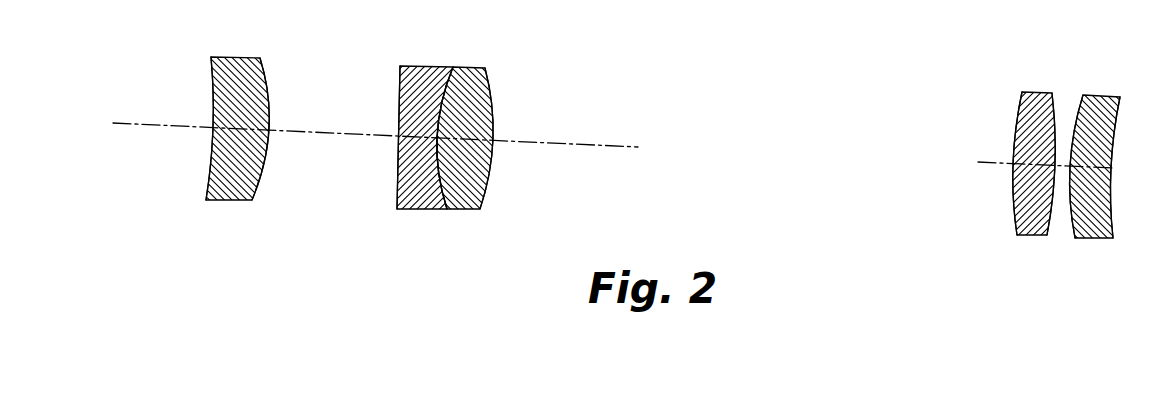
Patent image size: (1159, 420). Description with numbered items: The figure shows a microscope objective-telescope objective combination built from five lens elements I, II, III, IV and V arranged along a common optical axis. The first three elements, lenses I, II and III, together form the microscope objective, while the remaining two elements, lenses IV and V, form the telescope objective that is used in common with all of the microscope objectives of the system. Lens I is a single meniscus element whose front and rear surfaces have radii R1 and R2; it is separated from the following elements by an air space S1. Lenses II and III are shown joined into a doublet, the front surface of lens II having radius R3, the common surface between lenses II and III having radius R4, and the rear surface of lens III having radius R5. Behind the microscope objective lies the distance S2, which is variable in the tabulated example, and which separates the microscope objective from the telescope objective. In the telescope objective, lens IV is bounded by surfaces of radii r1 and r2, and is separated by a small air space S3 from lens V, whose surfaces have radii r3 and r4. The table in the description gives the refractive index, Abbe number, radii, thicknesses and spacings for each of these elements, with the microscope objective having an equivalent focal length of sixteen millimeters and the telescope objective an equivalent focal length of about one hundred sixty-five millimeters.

The lens element I is at (243, 57).
The lens element II is at (430, 46).
The lens element III is at (491, 46).
The lens element IV is at (1050, 73).
The lens element V is at (1105, 94).
The radius R1 is at (207, 185).
The radius R2 is at (255, 184).
The radius R3 is at (395, 192).
The radius R4 is at (443, 193).
The radius R5 is at (482, 193).
The radius r1 is at (1015, 216).
The radius r2 is at (1048, 226).
The radius r3 is at (1076, 226).
The radius r4 is at (1113, 220).
The distance S1 is at (340, 132).
The distance S2 is at (624, 147).
The distance S3 is at (1066, 164).